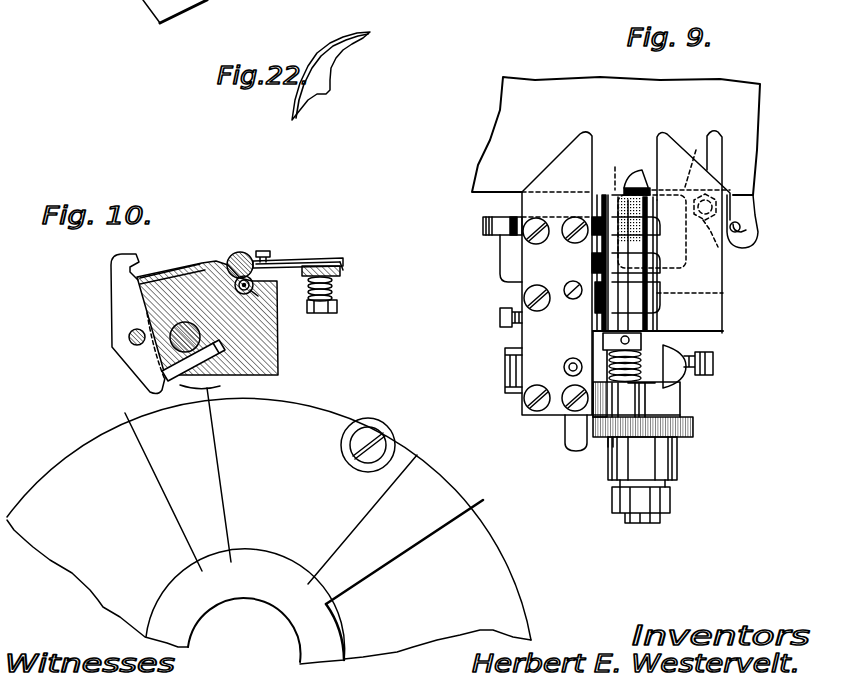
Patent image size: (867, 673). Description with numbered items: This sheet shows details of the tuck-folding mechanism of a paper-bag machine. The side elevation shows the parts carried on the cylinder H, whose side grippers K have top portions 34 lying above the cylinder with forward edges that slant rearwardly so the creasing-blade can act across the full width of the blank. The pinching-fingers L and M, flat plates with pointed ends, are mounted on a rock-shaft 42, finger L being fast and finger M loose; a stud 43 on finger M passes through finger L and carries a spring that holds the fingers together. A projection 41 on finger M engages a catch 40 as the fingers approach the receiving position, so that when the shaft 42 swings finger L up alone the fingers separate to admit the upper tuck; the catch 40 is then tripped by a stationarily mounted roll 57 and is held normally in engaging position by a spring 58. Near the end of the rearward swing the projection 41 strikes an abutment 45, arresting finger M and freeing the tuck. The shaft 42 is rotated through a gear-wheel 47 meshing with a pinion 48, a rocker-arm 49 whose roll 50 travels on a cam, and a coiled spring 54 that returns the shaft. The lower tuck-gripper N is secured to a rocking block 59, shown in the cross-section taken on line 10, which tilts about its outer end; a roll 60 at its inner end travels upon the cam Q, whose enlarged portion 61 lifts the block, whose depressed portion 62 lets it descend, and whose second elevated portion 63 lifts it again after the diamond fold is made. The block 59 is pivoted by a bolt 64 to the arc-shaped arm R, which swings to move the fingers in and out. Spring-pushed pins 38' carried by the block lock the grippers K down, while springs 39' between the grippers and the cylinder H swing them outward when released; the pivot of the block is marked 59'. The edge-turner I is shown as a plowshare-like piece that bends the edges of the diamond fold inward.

In FIG. 22, the blade I is at (331, 72).
In FIG. 9, the cylinder H is at (497, 130).
In FIG. 9, the side gripper K is at (641, 187).
In FIG. 9, the pinching-finger L is at (717, 140).
In FIG. 10, the pinching-finger L is at (340, 273).
In FIG. 9, the pinching-finger M is at (710, 277).
In FIG. 10, the pinching-finger M is at (342, 263).
In FIG. 9, the lower tuck-gripper N is at (533, 338).
In FIG. 10, the lower tuck-gripper N is at (168, 268).
In FIG. 10, the cam Q is at (350, 408).
In FIG. 9, the arm R is at (570, 433).
In FIG. 9, the section line 10 is at (792, 247).
In FIG. 9, the top portion 34 is at (647, 187).
In FIG. 9, the pin 38' is at (625, 173).
In FIG. 10, the pin 38' is at (220, 263).
In FIG. 9, the spring 39' is at (652, 231).
In FIG. 9, the catch 40 is at (492, 220).
In FIG. 10, the catch 40 is at (123, 282).
In FIG. 9, the projection 41 is at (728, 207).
In FIG. 10, the projection 41 is at (343, 270).
In FIG. 9, the rock-shaft 42 is at (633, 385).
In FIG. 10, the stud 43 is at (333, 295).
In FIG. 9, the abutment 45 is at (740, 232).
In FIG. 9, the gear-wheel 47 is at (677, 438).
In FIG. 9, the pinion 48 is at (613, 440).
In FIG. 9, the rocker-arm 49 is at (668, 468).
In FIG. 9, the roll 50 is at (665, 508).
In FIG. 9, the coiled spring 54 is at (640, 355).
In FIG. 10, the roll 57 is at (389, 425).
In FIG. 10, the spring 58 is at (222, 352).
In FIG. 9, the rocking block 59 is at (683, 384).
In FIG. 10, the rocking block 59 is at (253, 318).
In FIG. 10, the pivot 59' is at (278, 303).
In FIG. 10, the roll 60 is at (273, 380).
In FIG. 10, the enlarged portion 61 is at (488, 513).
In FIG. 10, the depressed portion 62 is at (297, 397).
In FIG. 10, the second elevated portion 63 is at (77, 440).
In FIG. 9, the bolt 64 is at (510, 384).